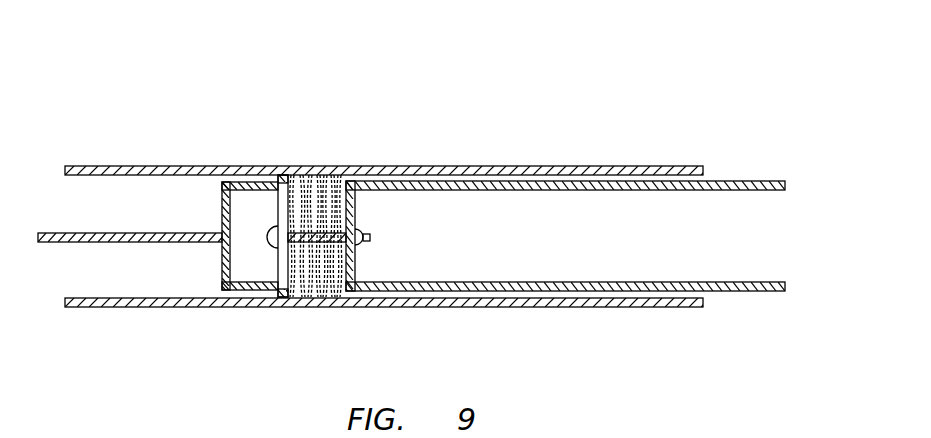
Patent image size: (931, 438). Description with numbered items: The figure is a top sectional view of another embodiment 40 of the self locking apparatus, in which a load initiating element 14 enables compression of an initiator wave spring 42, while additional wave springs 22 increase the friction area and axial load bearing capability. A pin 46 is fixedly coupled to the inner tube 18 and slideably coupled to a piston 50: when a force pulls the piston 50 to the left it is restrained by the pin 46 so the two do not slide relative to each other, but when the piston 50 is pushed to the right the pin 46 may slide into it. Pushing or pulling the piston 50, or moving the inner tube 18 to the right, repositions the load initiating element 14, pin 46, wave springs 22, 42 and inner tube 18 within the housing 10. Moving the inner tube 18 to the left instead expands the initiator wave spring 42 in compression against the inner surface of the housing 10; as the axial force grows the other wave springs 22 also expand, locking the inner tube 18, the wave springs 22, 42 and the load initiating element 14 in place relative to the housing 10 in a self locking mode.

The housing 10 is at (95, 308).
The load initiating element 14 is at (278, 200).
The inner tube 18 is at (741, 191).
The additional wave springs 22 is at (302, 172).
The embodiment of the self locking apparatus 40 is at (481, 86).
The initiator wave spring 42 is at (287, 165).
The pin 46 is at (366, 243).
The piston 50 is at (222, 256).